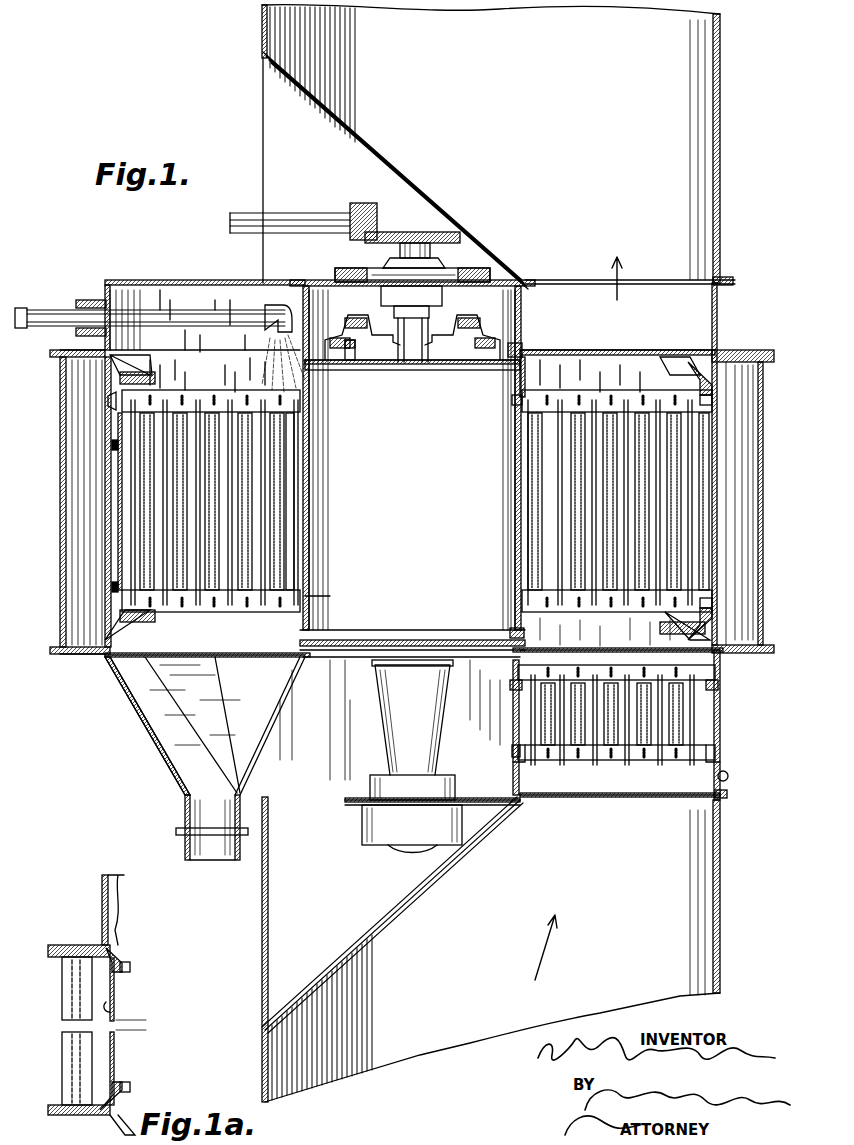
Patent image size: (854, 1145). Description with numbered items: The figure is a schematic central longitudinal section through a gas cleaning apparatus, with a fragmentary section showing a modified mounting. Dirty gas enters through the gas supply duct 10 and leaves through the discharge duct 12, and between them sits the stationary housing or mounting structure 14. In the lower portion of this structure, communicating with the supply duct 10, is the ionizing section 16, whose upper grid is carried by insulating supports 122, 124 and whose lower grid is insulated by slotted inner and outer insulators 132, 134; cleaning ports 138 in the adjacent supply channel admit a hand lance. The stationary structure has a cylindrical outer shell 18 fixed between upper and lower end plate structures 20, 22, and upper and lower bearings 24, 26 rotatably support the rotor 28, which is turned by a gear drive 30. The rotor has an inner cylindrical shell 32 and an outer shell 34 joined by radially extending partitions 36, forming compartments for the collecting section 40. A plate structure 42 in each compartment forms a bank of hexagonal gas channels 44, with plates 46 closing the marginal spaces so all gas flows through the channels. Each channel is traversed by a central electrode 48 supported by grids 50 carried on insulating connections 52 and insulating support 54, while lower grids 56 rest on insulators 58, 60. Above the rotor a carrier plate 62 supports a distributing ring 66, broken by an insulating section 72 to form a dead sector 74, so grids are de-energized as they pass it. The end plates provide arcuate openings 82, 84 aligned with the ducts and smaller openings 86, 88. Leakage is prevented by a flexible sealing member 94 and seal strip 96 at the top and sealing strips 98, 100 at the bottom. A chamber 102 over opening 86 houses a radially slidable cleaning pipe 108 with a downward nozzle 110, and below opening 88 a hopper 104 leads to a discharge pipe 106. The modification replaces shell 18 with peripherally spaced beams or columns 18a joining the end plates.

In FIG. 1, the gas supply duct 10 is at (712, 872).
In FIG. 1, the discharge duct 12 is at (712, 132).
In FIG. 1, the stationary housing or mounting structure 14 is at (322, 667).
In FIG. 1, the ionizing section 16 is at (732, 724).
In FIG. 1, the cylindrical outer shell 18 is at (758, 472).
In FIG. 1A, the peripherally spaced beams or columns 18a is at (68, 985).
In FIG. 1, the upper end plate structure 20 is at (728, 352).
In FIG. 1, the lower end plate structure 22 is at (740, 652).
In FIG. 1, the upper bearing 24 is at (380, 262).
In FIG. 1, the lower bearing 26 is at (425, 780).
In FIG. 1, the rotor 28 is at (420, 553).
In FIG. 1, the gear drive 30 is at (400, 232).
In FIG. 1, the inner cylindrical shell 32 is at (522, 338).
In FIG. 1, the outer shell 34 is at (714, 462).
In FIG. 1A, the outer shell 34 is at (112, 1008).
In FIG. 1, the radially extending partitions 36 is at (600, 350).
In FIG. 1, the collecting section 40 is at (617, 440).
In FIG. 1, the plate structure 42 is at (118, 490).
In FIG. 1, the gas channels 44 is at (112, 518).
In FIG. 1, the plates 46 is at (118, 448).
In FIG. 1, the electrode 48 is at (292, 505).
In FIG. 1, the grids 50 is at (196, 400).
In FIG. 1, the insulating connections 52 is at (112, 403).
In FIG. 1, the insulating support 54 is at (518, 400).
In FIG. 1, the grids 56 is at (232, 608).
In FIG. 1, the insulators 58 is at (110, 640).
In FIG. 1, the insulators 60 is at (318, 598).
In FIG. 1, the carrier plate 62 is at (455, 320).
In FIG. 1, the distributing ring 66 is at (455, 356).
In FIG. 1, the insulating section 72 is at (358, 345).
In FIG. 1, the sector 74 is at (352, 345).
In FIG. 1, the arcuate opening 82 is at (620, 350).
In FIG. 1, the arcuate opening 84 is at (576, 658).
In FIG. 1, the arcuate opening 86 is at (190, 360).
In FIG. 1, the arcuate opening 88 is at (218, 658).
In FIG. 1, the flexible sealing member 94 is at (700, 360).
In FIG. 1A, the flexible sealing member 94 is at (112, 956).
In FIG. 1, the seal strip 96 is at (545, 375).
In FIG. 1, the outer sealing strip 98 is at (708, 645).
In FIG. 1A, the outer sealing strip 98 is at (114, 1088).
In FIG. 1, the inner sealing strip 100 is at (520, 635).
In FIG. 1, the chamber 102 is at (165, 283).
In FIG. 1, the hopper 104 is at (200, 683).
In FIG. 1, the discharge pipe 106 is at (214, 850).
In FIG. 1, the cleaning pipe 108 is at (40, 310).
In FIG. 1, the nozzle 110 is at (270, 305).
In FIG. 1, the insulating support 122 is at (720, 685).
In FIG. 1, the insulating support 124 is at (525, 672).
In FIG. 1, the inner insulator 132 is at (720, 756).
In FIG. 1, the outer insulator 134 is at (515, 752).
In FIG. 1, the cleaning ports 138 is at (716, 771).